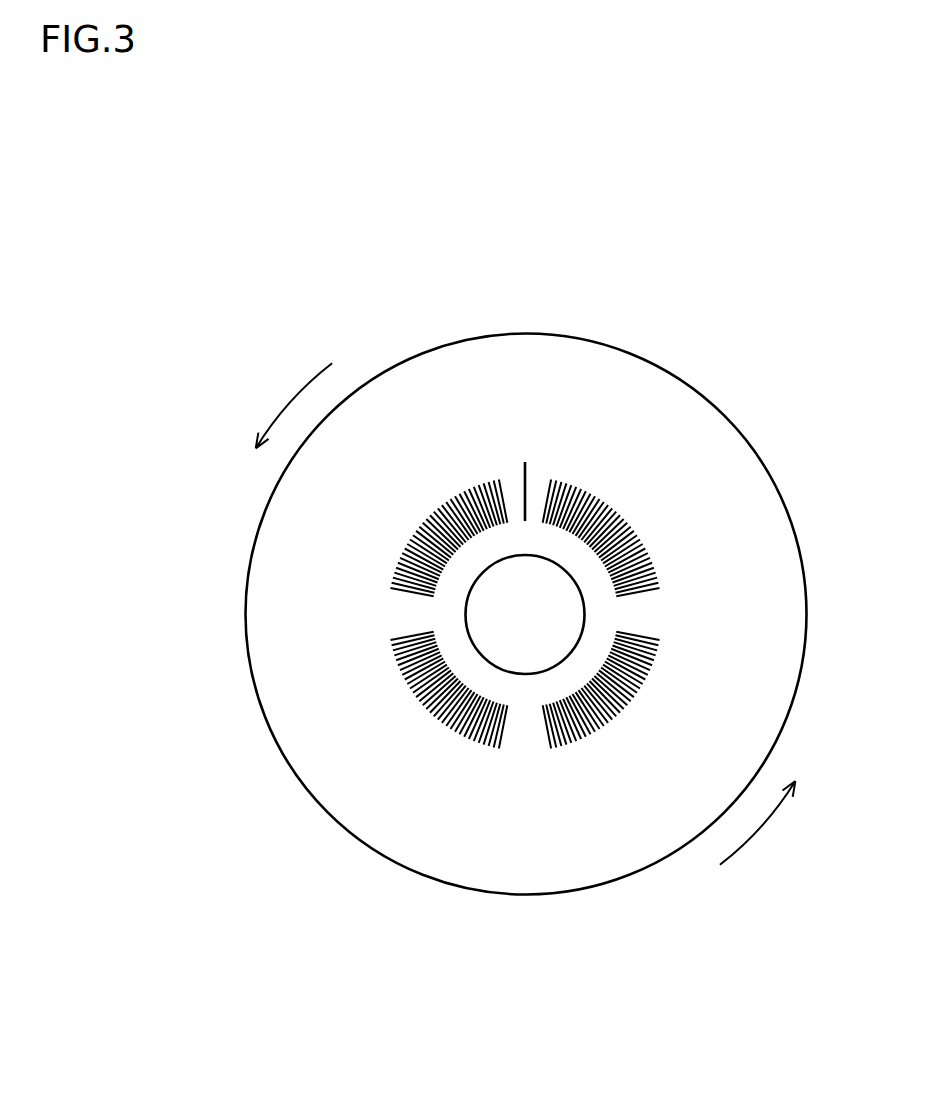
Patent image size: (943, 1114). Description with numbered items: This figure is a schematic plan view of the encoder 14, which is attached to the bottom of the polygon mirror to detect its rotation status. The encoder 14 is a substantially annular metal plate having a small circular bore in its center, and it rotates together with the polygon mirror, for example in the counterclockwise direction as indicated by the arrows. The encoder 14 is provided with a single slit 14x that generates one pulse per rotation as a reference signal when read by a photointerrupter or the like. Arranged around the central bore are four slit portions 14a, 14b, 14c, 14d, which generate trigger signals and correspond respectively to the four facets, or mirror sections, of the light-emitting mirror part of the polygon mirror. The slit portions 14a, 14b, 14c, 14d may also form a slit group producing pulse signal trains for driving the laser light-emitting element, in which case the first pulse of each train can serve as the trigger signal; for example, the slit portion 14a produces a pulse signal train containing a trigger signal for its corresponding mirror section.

The encoder 14 is at (219, 282).
The slit portion 14a is at (610, 505).
The slit portion 14b is at (638, 692).
The slit portion 14c is at (462, 740).
The slit portion 14d is at (410, 547).
The slit 14x is at (529, 484).